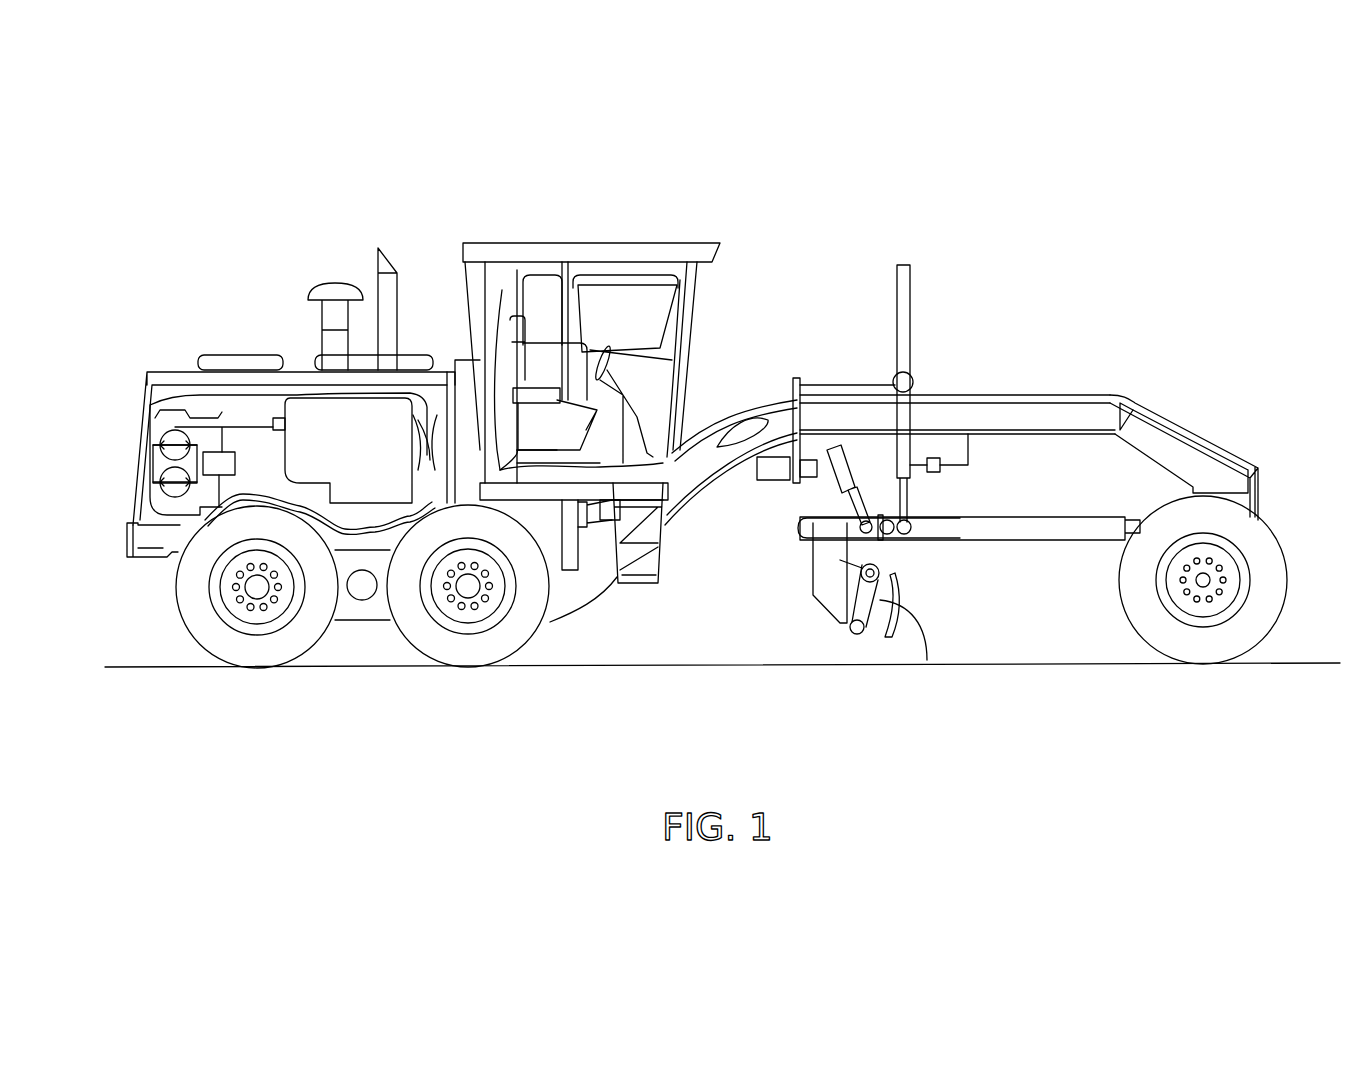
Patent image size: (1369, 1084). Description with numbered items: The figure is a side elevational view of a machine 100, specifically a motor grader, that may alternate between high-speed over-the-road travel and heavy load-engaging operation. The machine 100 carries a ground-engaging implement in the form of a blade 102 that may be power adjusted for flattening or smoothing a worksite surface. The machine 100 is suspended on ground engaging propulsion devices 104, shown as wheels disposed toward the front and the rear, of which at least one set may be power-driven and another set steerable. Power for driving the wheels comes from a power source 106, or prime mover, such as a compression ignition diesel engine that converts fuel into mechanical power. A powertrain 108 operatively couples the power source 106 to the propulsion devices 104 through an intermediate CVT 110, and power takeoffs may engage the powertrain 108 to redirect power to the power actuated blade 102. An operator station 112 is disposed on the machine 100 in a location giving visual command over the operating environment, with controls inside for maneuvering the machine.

The machine 100 is at (750, 240).
The blade 102 is at (905, 605).
The ground engaging propulsion devices 104 is at (465, 645).
The power source 106 is at (323, 420).
The powertrain 108 is at (192, 410).
The CVT 110 is at (160, 460).
The operator station 112 is at (573, 253).